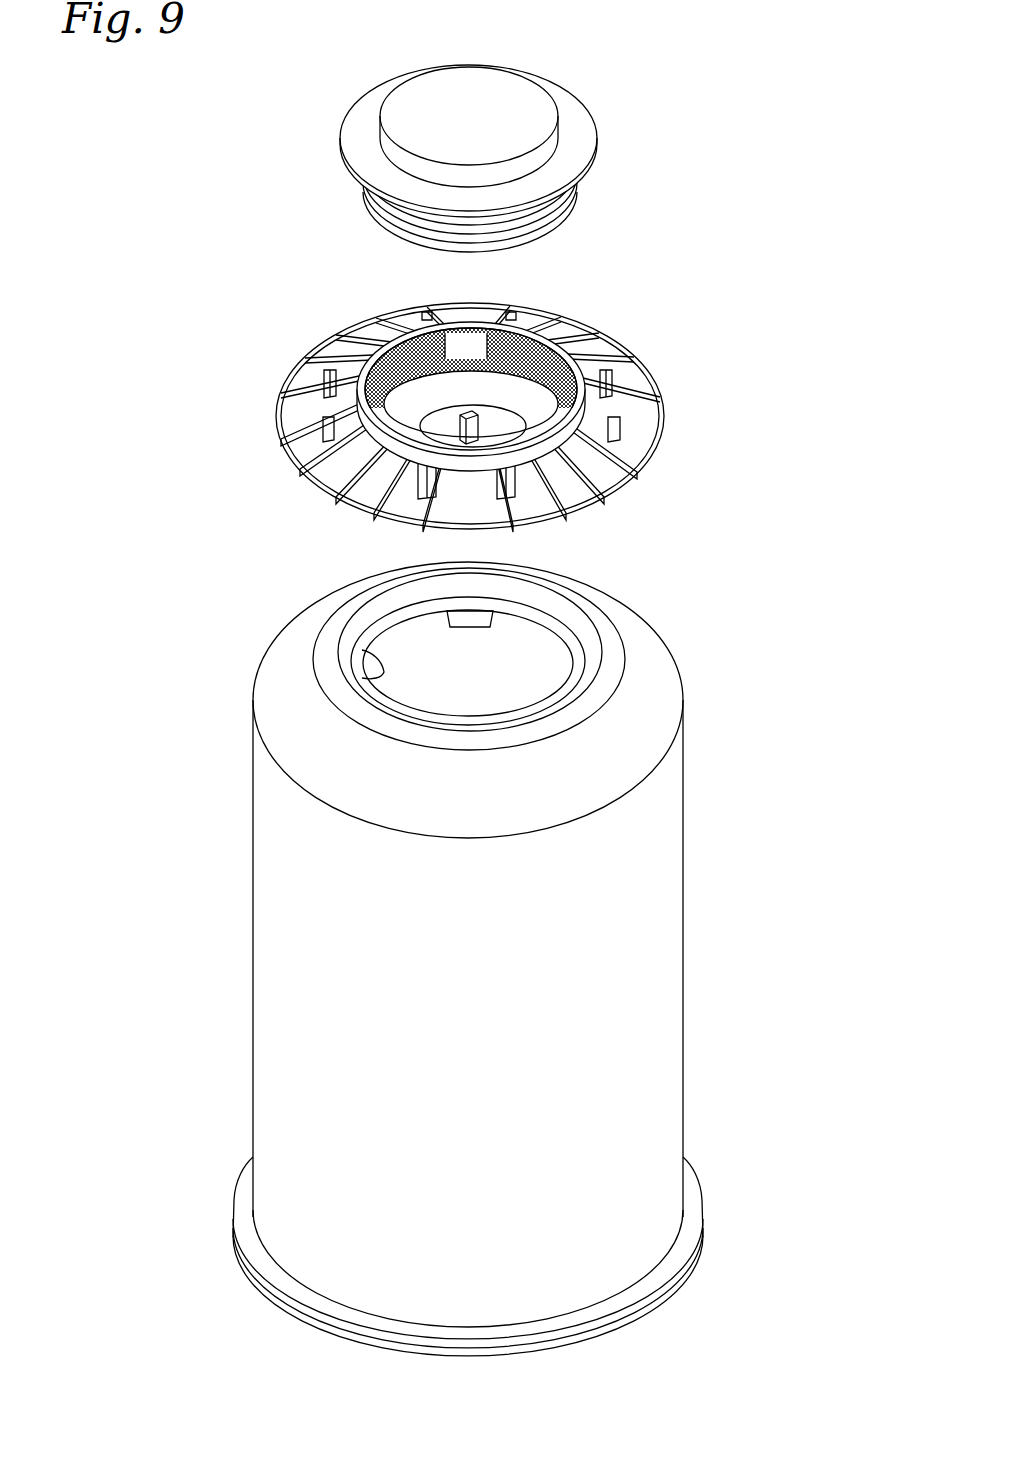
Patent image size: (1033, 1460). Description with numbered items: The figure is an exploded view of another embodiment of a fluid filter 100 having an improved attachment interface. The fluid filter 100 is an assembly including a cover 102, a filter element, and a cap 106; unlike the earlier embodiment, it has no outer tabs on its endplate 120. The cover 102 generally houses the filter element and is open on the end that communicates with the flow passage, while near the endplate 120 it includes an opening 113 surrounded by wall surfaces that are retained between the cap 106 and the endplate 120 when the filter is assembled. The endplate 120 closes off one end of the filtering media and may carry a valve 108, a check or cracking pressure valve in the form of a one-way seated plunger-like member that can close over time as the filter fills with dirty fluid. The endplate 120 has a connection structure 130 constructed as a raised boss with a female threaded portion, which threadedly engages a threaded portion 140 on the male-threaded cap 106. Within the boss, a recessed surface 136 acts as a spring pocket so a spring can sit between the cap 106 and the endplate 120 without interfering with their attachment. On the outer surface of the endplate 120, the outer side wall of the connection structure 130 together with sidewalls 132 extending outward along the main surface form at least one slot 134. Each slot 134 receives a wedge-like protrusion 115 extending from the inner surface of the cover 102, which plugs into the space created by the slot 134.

The fluid filter 100 is at (729, 189).
The cover 102 is at (435, 950).
The cap 106 is at (341, 142).
The valve 108 is at (472, 412).
The opening 113 is at (378, 665).
The protrusion 115 is at (478, 624).
The endplate 120 is at (435, 401).
The connection structure 130 is at (416, 318).
The sidewalls 132 is at (322, 358).
The slot 134 is at (335, 398).
The recessed surface 136 is at (500, 395).
The threaded portion 140 is at (552, 226).